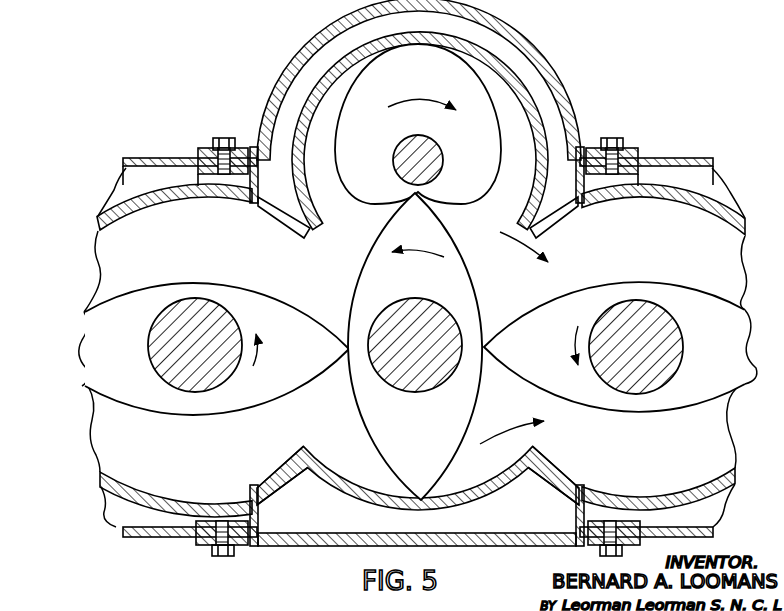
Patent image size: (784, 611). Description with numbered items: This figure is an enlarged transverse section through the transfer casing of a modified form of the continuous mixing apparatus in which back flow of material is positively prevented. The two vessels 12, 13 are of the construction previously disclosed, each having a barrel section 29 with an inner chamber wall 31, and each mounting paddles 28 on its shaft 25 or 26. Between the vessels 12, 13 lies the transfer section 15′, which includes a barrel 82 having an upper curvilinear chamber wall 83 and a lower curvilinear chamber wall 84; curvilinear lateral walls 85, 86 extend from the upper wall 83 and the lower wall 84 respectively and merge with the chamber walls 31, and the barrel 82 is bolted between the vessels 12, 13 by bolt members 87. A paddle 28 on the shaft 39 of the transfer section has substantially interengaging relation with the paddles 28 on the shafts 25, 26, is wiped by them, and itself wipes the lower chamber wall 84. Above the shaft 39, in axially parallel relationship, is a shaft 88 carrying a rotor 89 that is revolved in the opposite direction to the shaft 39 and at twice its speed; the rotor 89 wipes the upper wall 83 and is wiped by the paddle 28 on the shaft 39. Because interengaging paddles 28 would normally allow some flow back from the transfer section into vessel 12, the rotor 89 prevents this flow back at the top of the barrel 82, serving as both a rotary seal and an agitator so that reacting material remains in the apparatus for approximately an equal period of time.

The vessel 12 is at (133, 156).
The vessel 13 is at (718, 184).
The transfer section 15′ is at (566, 78).
The shaft 25 is at (181, 298).
The shaft 26 is at (644, 300).
The paddle 28 is at (230, 292).
The barrel section 29 is at (155, 158).
The chamber wall 31 is at (180, 159).
The shaft 39 is at (445, 373).
The barrel 82 is at (582, 114).
The upper curvilinear chamber wall 83 is at (518, 72).
The lower curvilinear chamber wall 84 is at (520, 488).
The curvilinear lateral wall 85 is at (290, 216).
The curvilinear lateral wall 86 is at (278, 470).
The bolt member 87 is at (612, 140).
The shaft 88 is at (442, 164).
The rotor 89 is at (369, 182).